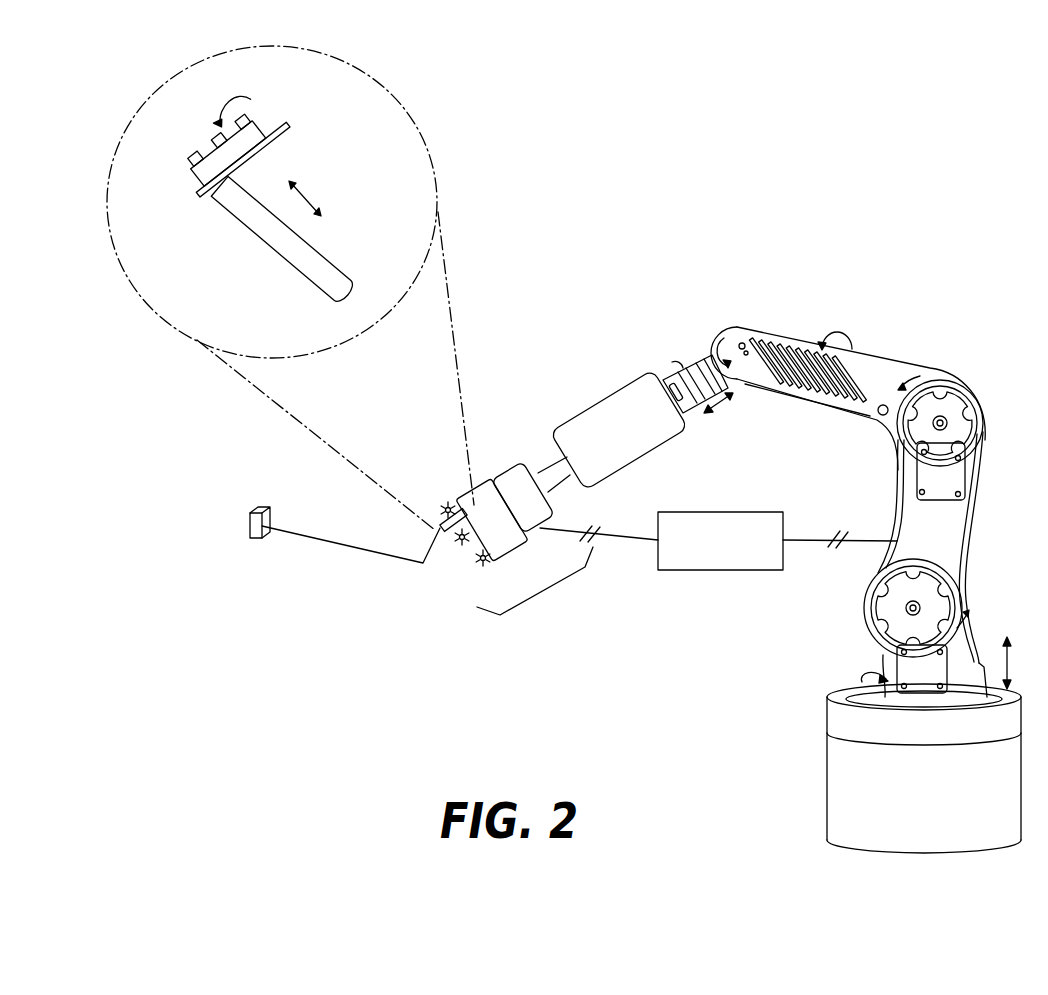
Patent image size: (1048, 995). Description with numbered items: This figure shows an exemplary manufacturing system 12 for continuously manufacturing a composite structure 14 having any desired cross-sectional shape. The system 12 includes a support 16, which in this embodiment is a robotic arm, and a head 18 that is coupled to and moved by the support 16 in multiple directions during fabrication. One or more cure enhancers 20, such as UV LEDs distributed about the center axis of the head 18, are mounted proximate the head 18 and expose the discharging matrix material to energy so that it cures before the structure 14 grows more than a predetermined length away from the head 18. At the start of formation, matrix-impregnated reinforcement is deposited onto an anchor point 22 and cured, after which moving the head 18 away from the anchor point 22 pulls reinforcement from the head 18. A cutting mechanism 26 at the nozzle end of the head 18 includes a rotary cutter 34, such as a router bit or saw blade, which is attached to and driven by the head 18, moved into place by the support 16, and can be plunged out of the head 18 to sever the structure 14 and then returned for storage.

The manufacturing system 12 is at (850, 187).
The composite structure 14 is at (343, 545).
The support 16 is at (858, 366).
The head 18 is at (546, 597).
The cure enhancer 20 is at (484, 561).
The anchor point 22 is at (250, 530).
The cutting mechanism 26 is at (216, 246).
The rotary cutter 34 is at (200, 171).